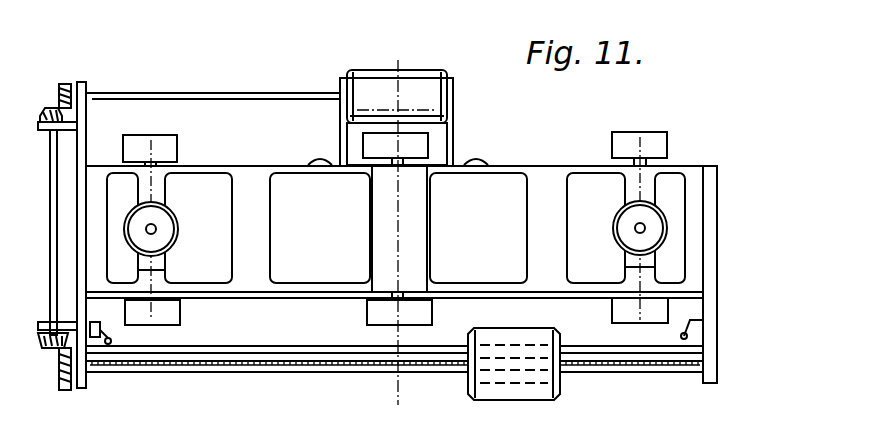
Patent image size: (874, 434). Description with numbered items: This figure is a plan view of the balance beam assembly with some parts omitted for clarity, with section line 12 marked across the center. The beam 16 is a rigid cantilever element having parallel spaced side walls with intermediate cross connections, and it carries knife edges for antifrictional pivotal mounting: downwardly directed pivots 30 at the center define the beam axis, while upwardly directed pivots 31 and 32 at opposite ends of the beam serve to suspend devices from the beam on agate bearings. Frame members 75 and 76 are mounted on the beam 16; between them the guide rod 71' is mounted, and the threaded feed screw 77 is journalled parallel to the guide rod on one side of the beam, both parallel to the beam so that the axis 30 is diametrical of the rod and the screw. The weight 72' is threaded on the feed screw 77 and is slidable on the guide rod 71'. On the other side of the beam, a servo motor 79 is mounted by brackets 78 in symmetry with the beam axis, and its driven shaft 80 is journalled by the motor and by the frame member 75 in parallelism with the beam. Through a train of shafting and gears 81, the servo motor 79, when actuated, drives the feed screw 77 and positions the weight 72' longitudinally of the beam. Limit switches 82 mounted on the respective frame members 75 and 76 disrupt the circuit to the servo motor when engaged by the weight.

The section line 12- 12 is at (418, 28).
The beam 16 is at (258, 161).
The downwardly directed pivots 30 is at (402, 270).
The upwardly directed pivots 31 is at (152, 272).
The upwardly directed pivots 32 is at (640, 268).
The guide rod 71' is at (394, 339).
The weight 72' is at (514, 381).
The frame member 75 is at (80, 134).
The frame member 76 is at (717, 373).
The threaded feed screw 77 is at (637, 370).
The brackets 78 is at (347, 137).
The servo motor 79 is at (377, 78).
The driven shaft 80 is at (244, 99).
The train of shafting and gears 81 is at (55, 297).
The limit switches 82 is at (112, 340).